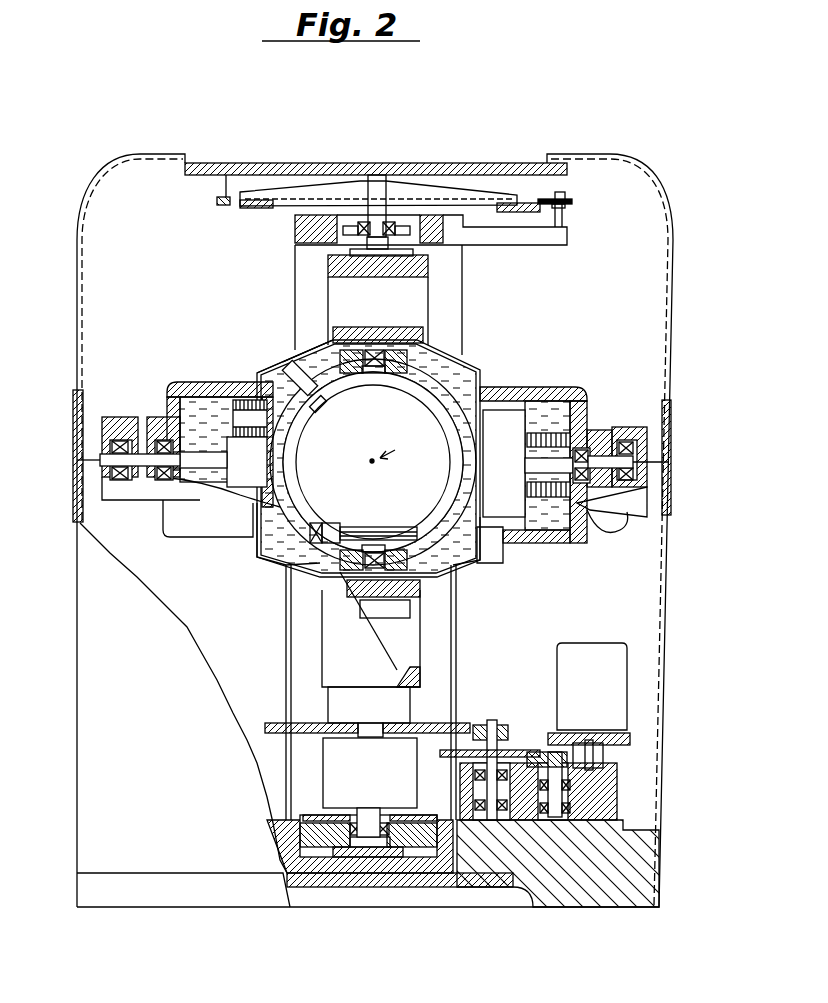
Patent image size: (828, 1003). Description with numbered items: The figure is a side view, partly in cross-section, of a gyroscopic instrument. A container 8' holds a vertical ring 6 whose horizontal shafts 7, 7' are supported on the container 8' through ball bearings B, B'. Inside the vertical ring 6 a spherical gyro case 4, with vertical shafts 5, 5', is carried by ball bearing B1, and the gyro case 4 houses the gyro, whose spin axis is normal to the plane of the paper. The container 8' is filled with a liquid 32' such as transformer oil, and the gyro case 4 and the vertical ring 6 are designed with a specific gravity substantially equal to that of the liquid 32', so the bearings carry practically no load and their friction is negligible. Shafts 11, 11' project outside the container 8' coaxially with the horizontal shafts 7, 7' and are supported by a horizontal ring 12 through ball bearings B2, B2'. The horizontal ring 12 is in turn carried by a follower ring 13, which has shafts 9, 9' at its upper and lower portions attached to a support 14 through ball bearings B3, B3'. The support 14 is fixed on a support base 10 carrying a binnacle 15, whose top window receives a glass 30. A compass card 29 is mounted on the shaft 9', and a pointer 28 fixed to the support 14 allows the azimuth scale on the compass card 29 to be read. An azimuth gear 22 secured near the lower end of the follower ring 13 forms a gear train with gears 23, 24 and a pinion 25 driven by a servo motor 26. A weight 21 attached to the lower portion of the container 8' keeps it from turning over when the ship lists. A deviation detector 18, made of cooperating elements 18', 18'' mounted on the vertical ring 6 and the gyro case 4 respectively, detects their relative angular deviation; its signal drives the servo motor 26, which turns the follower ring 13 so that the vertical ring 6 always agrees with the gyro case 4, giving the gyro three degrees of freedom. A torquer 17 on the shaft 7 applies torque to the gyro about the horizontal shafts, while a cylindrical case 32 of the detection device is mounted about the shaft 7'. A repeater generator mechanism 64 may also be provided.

The binnacle 15 is at (78, 706).
The glass 30 is at (253, 160).
The compass card 29 is at (228, 150).
The follower ring 13 is at (420, 257).
The shaft 9' is at (383, 171).
The ball bearing B3' is at (369, 172).
The pointer 28 is at (543, 197).
The support 14 is at (300, 262).
The spherical gyro case 4 is at (413, 405).
The vertical ring 6 is at (447, 390).
The deviation detector 18 is at (268, 341).
The deviation detector element 18' is at (289, 326).
The deviation detector element 18'' is at (284, 366).
The torquer 17 is at (201, 425).
The vertical shaft 5 is at (373, 336).
The ball bearing B1 is at (398, 350).
The vertical shaft 5' is at (360, 589).
The horizontal shaft 7 is at (208, 514).
The ball bearing B2' is at (188, 441).
The ball bearing B is at (160, 429).
The shaft 11' is at (107, 464).
The container 8' is at (532, 454).
The cylindrical case 32 is at (517, 431).
The liquid 32' is at (558, 514).
The horizontal shaft 7' is at (544, 527).
The ball bearing B' is at (592, 421).
The ball bearing B2 is at (629, 434).
The shaft 11 is at (653, 470).
The horizontal ring 12 is at (645, 500).
The weight 21 is at (390, 612).
The azimuth gear 22 is at (462, 727).
The gear 23 is at (518, 748).
The gear 24 is at (536, 750).
The pinion 25 is at (605, 758).
The servo motor 26 is at (622, 683).
The support base 10 is at (492, 878).
The repeater generator mechanism 64 is at (393, 807).
The ball bearing B3 is at (368, 895).
The shaft 9 is at (368, 884).